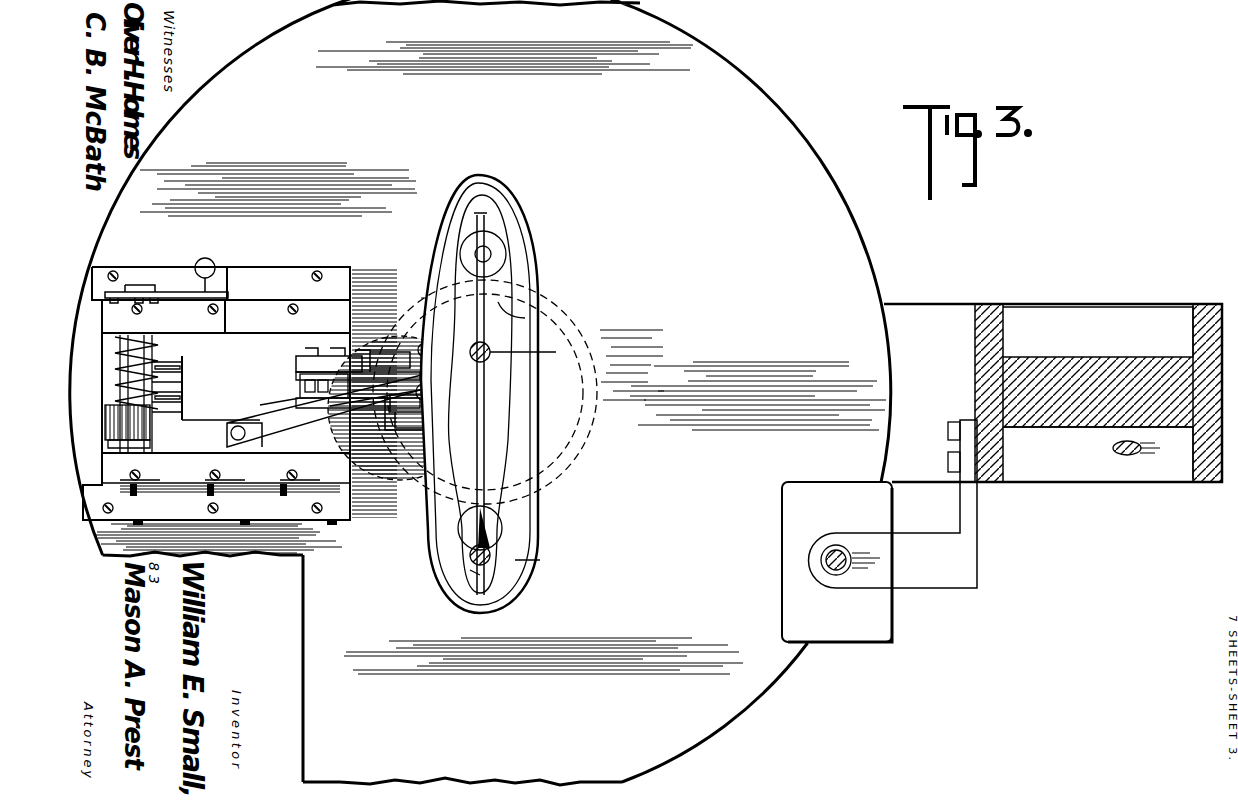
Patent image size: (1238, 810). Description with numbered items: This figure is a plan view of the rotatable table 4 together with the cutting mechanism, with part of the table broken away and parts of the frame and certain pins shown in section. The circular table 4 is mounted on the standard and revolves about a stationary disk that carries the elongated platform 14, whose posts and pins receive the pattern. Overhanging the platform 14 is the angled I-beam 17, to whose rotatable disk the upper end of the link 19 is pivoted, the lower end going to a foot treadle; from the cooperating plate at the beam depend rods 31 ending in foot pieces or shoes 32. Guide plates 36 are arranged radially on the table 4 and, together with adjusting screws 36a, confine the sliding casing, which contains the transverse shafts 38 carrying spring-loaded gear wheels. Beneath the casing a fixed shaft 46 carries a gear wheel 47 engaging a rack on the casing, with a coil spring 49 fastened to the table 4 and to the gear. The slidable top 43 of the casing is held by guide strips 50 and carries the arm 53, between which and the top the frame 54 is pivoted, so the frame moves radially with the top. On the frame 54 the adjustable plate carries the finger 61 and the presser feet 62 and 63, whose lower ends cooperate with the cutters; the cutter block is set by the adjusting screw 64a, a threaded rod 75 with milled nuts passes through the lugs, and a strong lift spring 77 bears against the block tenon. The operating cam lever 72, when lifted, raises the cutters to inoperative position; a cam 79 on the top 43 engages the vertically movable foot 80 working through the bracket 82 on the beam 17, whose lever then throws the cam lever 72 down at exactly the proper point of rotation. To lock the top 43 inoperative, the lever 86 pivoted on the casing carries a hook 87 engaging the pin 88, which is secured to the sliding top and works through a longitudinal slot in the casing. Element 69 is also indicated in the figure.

The rotatable table 4 is at (480, 392).
The elongated platform 14 is at (548, 470).
The angled I-beam 17 is at (1060, 344).
The link 19 is at (1112, 448).
The depending rod 31 is at (528, 464).
The foot piece or shoe 32 is at (505, 316).
The guide plates 36 is at (216, 396).
The adjusting screws 36a is at (310, 520).
The transverse shafts 38 is at (148, 486).
The slidable top 43 is at (226, 376).
The fixed shaft 46 is at (118, 355).
The gear wheel 47 is at (160, 432).
The coil spring 49 is at (125, 380).
The guide strips 50 is at (226, 468).
The arm 53 is at (290, 428).
The frame 54 is at (329, 387).
The finger 61 is at (375, 325).
The presser foot 62 is at (406, 412).
The presser foot 63 is at (500, 440).
The adjusting screw 64a is at (492, 440).
The spring 69 is at (440, 446).
The operating cam lever 72 is at (325, 366).
The threaded rod 75 is at (433, 345).
The lift spring 77 is at (300, 388).
The cam 79 is at (190, 380).
The vertically movable foot 80 is at (837, 562).
The bracket 82 is at (893, 504).
The lever 86 is at (132, 288).
The hook 87 is at (205, 305).
The pin 88 is at (216, 270).